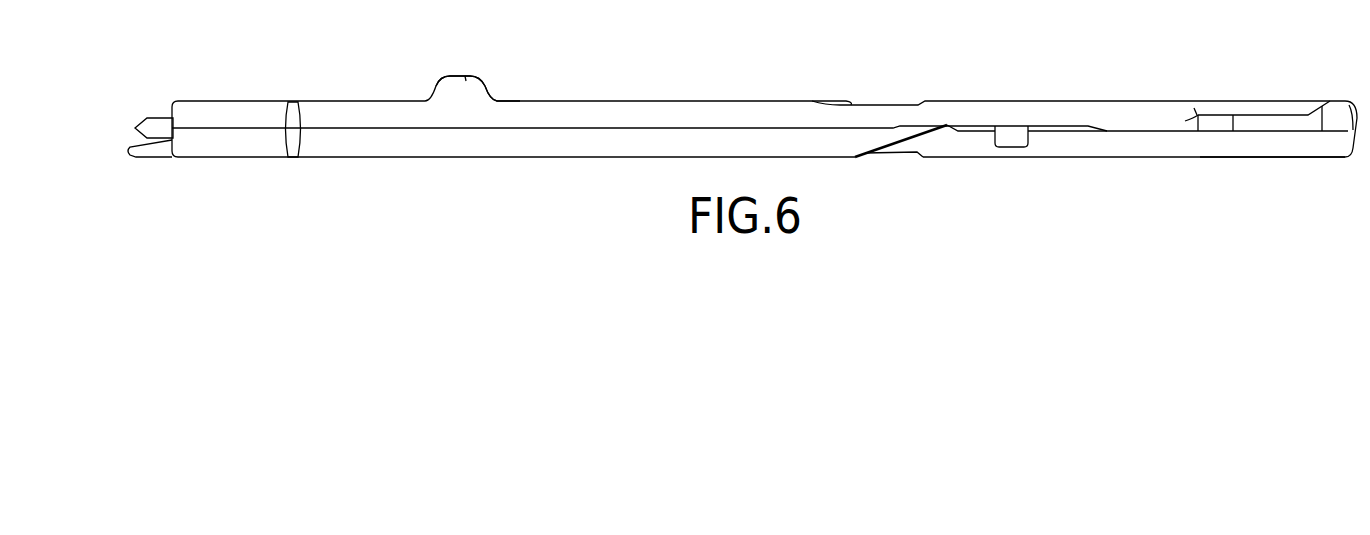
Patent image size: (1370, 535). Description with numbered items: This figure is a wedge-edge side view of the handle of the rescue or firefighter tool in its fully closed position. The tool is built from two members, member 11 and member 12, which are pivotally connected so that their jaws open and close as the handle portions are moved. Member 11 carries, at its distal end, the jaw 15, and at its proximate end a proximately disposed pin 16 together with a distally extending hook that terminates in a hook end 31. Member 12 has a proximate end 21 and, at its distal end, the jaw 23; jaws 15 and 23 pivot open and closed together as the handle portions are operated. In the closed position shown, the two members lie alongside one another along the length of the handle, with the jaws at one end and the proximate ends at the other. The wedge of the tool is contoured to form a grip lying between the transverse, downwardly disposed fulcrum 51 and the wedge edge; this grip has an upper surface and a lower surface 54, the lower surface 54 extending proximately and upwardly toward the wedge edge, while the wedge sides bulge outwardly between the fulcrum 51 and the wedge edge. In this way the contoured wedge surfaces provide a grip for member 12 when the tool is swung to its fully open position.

The member 11 is at (695, 100).
The member 12 is at (533, 158).
The jaw 15 is at (1258, 100).
The pin 16 is at (146, 137).
The proximate end 21 is at (130, 147).
The jaw 23 is at (1240, 148).
The hook end 31 is at (303, 127).
The fulcrum 51 is at (465, 78).
The lower surface 54 is at (497, 100).